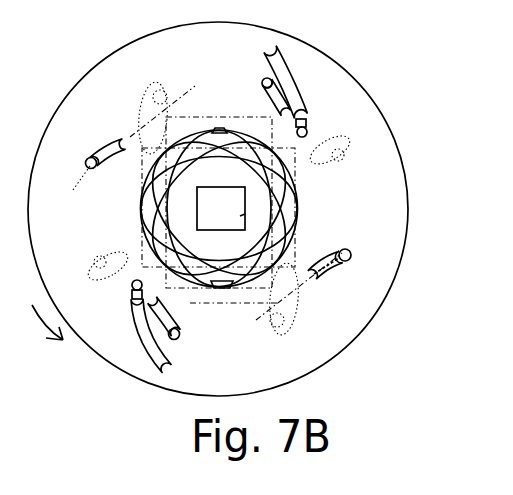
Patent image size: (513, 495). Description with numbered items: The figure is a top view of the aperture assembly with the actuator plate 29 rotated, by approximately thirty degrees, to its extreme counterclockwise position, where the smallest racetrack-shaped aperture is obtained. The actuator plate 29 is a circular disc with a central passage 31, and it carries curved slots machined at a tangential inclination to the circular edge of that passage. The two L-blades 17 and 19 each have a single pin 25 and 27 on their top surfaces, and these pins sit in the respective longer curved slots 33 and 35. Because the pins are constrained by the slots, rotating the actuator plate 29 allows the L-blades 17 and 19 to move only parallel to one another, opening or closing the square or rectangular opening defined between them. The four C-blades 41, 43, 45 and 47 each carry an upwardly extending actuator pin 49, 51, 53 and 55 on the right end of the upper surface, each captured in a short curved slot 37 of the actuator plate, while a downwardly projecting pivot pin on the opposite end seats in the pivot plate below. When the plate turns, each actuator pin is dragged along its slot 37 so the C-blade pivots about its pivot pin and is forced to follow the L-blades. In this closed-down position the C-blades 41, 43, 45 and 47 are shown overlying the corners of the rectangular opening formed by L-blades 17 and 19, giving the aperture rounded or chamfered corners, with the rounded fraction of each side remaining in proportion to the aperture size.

The L-blade 17 is at (199, 208).
The L-blade 19 is at (230, 224).
The pin 25 is at (131, 286).
The pin 27 is at (309, 137).
The actuator plate 29 is at (67, 98).
The central passage 31 is at (235, 289).
The longer curved slot 33 is at (132, 323).
The longer curved slot 35 is at (307, 101).
The short curved slot 37 is at (112, 167).
The C-blade 41 is at (180, 250).
The C-blade 43 is at (258, 189).
The C-blade 45 is at (177, 190).
The C-blade 47 is at (258, 250).
The actuator pin 49 is at (350, 262).
The actuator pin 51 is at (90, 157).
The actuator pin 53 is at (182, 339).
The actuator pin 55 is at (260, 79).